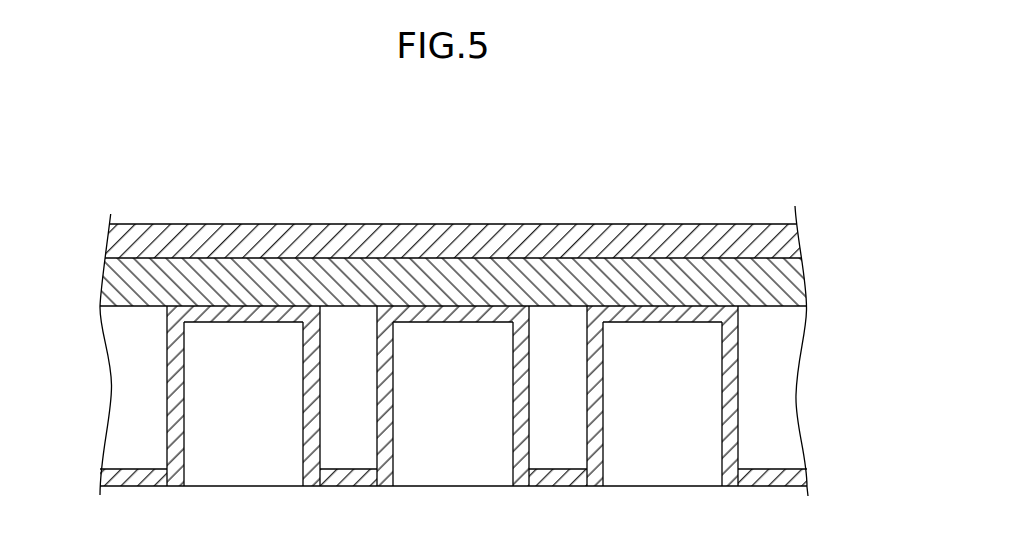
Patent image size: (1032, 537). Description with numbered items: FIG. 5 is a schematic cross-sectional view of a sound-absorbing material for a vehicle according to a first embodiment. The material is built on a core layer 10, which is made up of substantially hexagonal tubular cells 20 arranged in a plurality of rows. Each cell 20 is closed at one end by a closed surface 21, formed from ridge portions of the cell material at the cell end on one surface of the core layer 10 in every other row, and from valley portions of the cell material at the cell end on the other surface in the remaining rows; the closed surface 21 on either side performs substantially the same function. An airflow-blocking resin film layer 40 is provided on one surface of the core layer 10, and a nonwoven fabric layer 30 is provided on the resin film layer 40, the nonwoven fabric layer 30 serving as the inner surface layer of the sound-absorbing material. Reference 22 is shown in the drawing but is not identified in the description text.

The core layer 10 is at (475, 320).
The cell 20 is at (423, 315).
The closed surface 21 is at (245, 304).
The bottom portion 22 is at (243, 484).
The nonwoven fabric layer 30 is at (795, 243).
The airflow-blocking resin film layer 40 is at (800, 283).